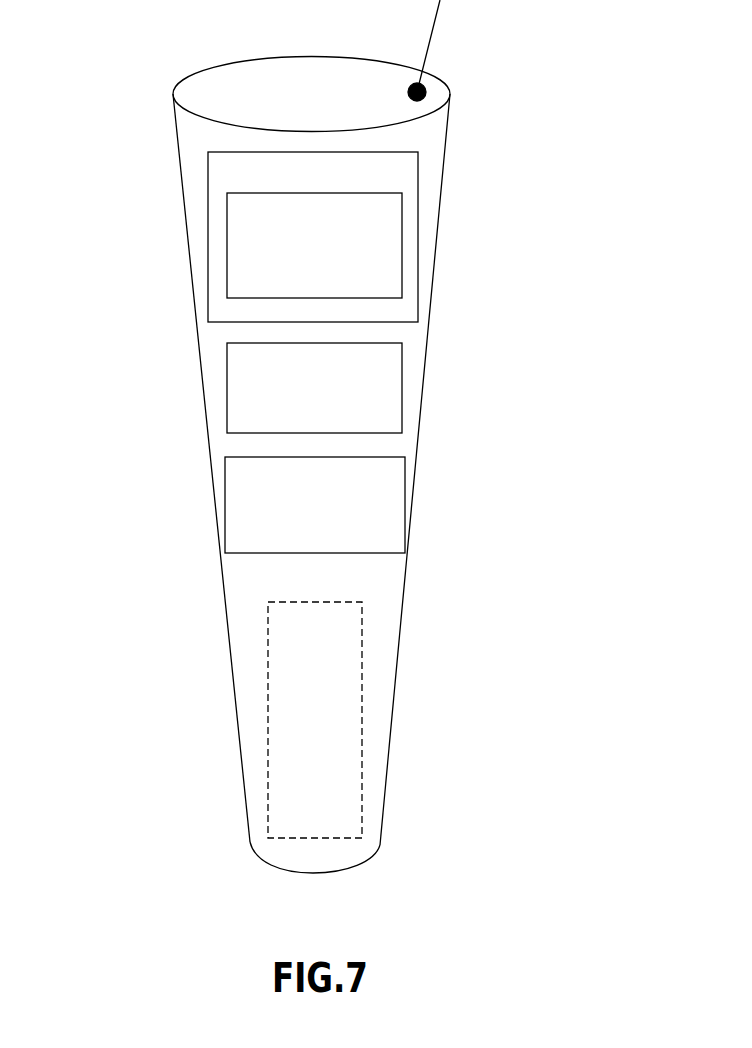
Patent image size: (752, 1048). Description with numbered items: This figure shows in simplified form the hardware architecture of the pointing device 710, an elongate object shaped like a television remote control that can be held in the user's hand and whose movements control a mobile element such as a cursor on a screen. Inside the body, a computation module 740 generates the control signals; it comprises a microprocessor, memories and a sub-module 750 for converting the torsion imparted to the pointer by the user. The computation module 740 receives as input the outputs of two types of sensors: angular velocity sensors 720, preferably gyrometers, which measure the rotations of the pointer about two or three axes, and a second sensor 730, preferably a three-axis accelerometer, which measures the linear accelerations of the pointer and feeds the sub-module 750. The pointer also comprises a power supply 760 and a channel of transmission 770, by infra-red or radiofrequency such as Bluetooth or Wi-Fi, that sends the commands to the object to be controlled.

The pointing device 710 is at (430, 175).
The angular velocity sensors 720 is at (402, 383).
The second sensor 730 is at (405, 482).
The computation module 740 is at (208, 188).
The sub-module 750 is at (227, 280).
The power supply 760 is at (362, 663).
The channel of transmission 770 is at (426, 91).